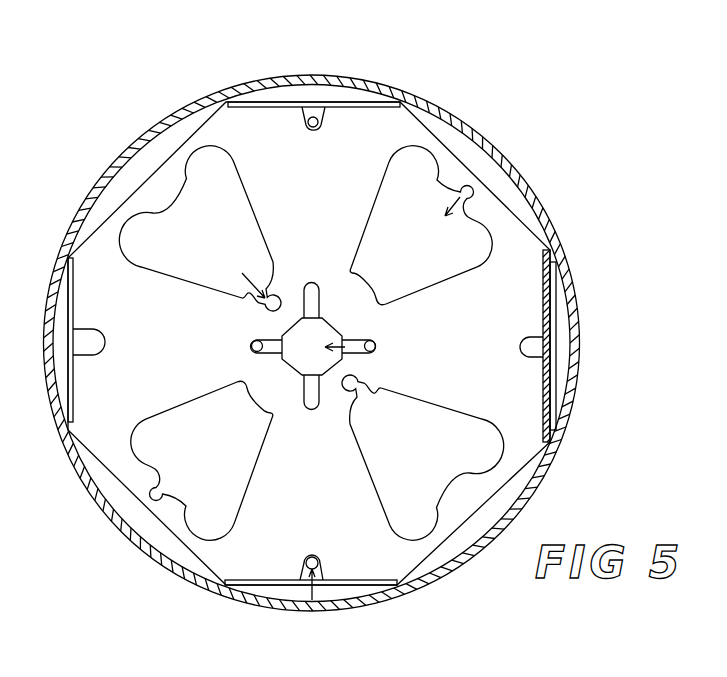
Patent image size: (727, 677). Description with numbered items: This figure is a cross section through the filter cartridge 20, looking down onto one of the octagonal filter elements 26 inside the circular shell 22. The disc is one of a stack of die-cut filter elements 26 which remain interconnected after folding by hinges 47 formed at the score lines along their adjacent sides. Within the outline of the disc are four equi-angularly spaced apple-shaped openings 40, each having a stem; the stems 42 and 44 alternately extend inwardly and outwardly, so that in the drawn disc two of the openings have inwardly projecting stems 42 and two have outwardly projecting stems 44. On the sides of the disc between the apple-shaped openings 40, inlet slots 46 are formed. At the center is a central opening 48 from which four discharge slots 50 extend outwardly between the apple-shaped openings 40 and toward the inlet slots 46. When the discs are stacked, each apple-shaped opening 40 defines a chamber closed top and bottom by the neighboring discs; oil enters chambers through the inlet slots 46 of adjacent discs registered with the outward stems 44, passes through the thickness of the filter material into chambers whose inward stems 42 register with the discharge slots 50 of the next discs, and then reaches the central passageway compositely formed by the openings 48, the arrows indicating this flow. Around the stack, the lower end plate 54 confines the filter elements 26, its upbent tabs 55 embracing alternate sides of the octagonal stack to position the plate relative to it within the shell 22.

The filter cartridge 20 is at (536, 107).
The shell 22 is at (579, 338).
The filter element 26 is at (498, 197).
The apple-shaped opening 40 is at (444, 412).
The inwardly extending stem 42 is at (255, 347).
The outwardly extending stem 44 is at (313, 130).
The inlet slot 46 is at (323, 110).
The hinge 47 is at (542, 292).
The central opening 48 is at (318, 324).
The discharge slot 50 is at (268, 341).
The lower end plate 54 is at (462, 130).
The upbent tab 55 is at (360, 105).